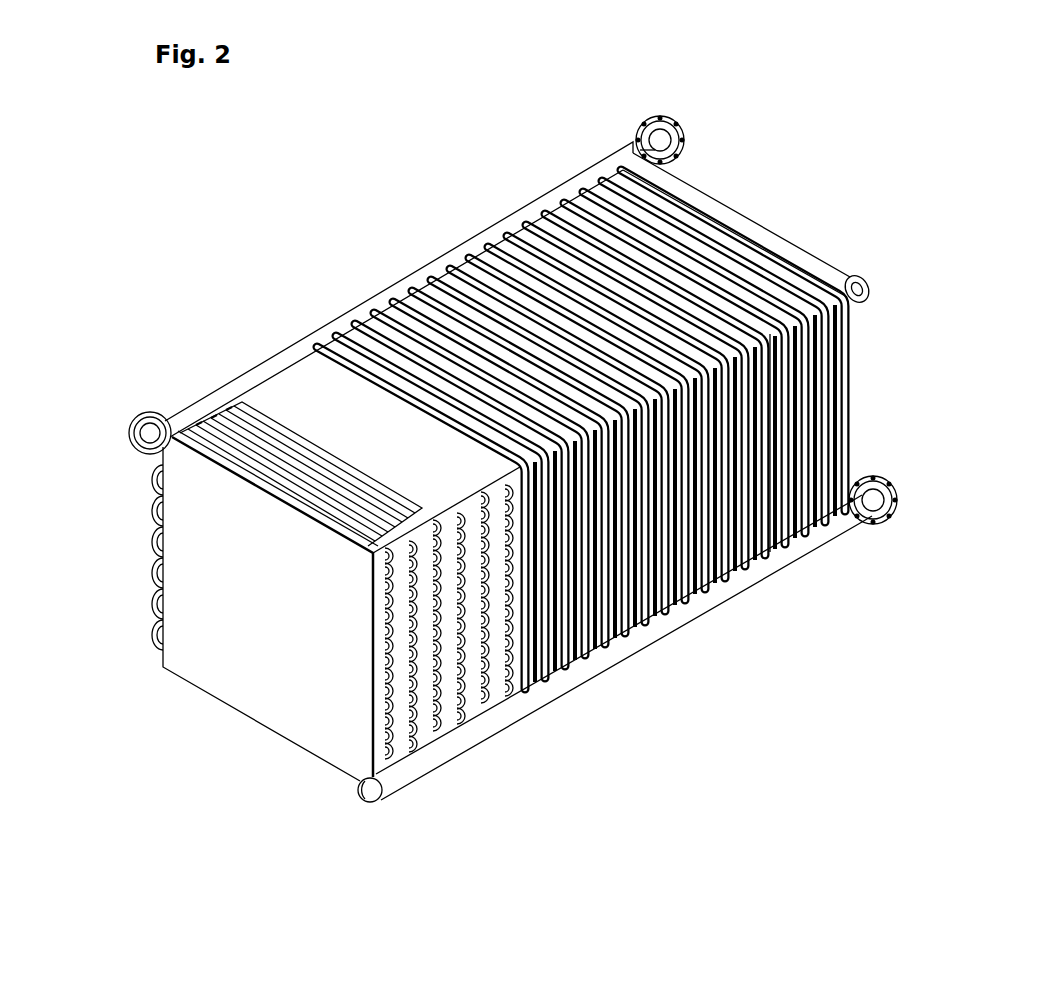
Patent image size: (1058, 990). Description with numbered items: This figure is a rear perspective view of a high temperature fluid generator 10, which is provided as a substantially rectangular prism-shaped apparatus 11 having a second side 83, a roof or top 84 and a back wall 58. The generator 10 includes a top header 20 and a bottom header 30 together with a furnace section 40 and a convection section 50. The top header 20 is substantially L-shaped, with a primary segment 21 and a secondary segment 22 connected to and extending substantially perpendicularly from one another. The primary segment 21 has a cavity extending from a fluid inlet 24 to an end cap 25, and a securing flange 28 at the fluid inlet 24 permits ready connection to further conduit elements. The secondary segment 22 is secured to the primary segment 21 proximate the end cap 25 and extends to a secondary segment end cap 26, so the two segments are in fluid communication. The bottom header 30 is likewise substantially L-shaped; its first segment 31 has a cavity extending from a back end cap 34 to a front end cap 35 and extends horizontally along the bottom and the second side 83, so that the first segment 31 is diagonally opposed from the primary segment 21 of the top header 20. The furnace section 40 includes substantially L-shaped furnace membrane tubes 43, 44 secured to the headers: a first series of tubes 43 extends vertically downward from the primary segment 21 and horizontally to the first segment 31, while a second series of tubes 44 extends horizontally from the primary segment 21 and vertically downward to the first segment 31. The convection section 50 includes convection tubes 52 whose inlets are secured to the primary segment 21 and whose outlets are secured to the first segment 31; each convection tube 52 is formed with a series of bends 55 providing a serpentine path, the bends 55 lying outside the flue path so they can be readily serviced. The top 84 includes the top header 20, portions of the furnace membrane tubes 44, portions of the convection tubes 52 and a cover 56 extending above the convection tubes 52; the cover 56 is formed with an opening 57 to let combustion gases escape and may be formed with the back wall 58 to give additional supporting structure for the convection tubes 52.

The high temperature fluid generator 10 is at (225, 183).
The substantially rectangular prism-shaped apparatus 11 is at (803, 113).
The top header 20 is at (623, 118).
The primary segment 21 is at (545, 192).
The secondary segment 22 is at (807, 257).
The fluid inlet 24 is at (143, 442).
The end cap 25 is at (663, 127).
The secondary segment end cap 26 is at (858, 287).
The securing flange 28 is at (148, 413).
The bottom header 30 is at (900, 528).
The first segment 31 is at (732, 583).
The back end cap 34 is at (365, 788).
The front end cap 35 is at (873, 487).
The furnace section 40 is at (663, 595).
The furnace membrane tubes (first series) 43 is at (770, 515).
The furnace membrane tubes (second series) 44 is at (455, 265).
The convection section 50 is at (455, 700).
The convection tubes 52 is at (147, 640).
The bends 55 is at (510, 701).
The cover 56 is at (305, 410).
The opening 57 is at (283, 470).
The back wall 58 is at (258, 660).
The second side 83 is at (678, 720).
The roof or top 84 is at (385, 330).